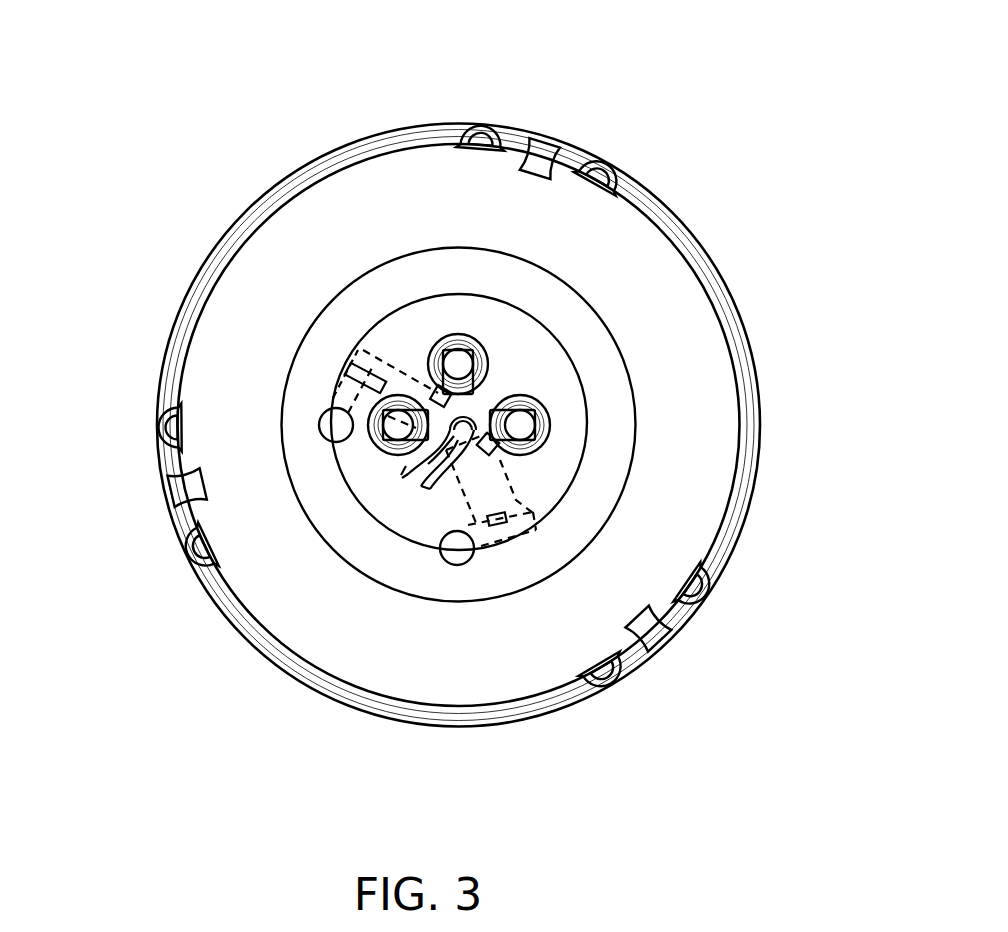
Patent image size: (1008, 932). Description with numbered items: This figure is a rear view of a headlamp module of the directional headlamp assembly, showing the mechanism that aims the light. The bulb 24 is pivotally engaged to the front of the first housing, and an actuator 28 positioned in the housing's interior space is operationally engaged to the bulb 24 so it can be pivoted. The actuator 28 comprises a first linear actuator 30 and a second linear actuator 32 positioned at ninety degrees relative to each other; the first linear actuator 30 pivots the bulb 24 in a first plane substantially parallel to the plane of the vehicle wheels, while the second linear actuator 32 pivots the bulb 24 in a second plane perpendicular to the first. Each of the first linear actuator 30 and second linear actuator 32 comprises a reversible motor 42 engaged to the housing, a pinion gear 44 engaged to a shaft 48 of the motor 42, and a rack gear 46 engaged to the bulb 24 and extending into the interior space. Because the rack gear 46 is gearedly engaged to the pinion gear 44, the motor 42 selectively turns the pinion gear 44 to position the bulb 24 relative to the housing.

The bulb 24 is at (217, 367).
The actuator 28 is at (498, 433).
The first linear actuator 30 is at (448, 393).
The second linear actuator 32 is at (520, 450).
The motor 42 is at (397, 367).
The pinion gear 44 is at (347, 363).
The rack gear 46 is at (317, 412).
The shaft 48 is at (365, 363).